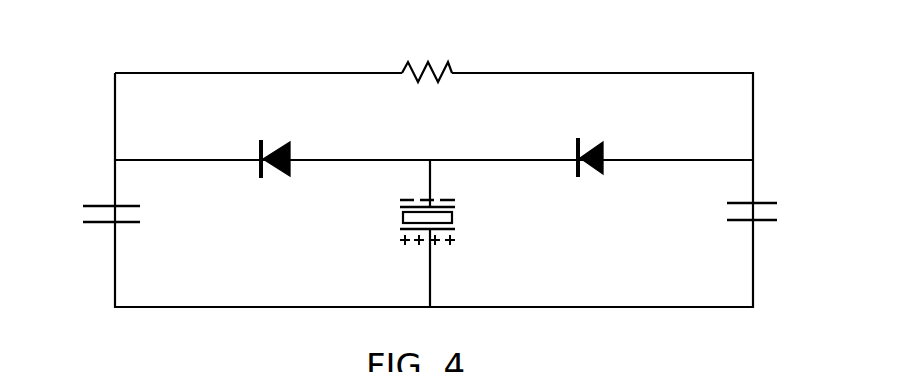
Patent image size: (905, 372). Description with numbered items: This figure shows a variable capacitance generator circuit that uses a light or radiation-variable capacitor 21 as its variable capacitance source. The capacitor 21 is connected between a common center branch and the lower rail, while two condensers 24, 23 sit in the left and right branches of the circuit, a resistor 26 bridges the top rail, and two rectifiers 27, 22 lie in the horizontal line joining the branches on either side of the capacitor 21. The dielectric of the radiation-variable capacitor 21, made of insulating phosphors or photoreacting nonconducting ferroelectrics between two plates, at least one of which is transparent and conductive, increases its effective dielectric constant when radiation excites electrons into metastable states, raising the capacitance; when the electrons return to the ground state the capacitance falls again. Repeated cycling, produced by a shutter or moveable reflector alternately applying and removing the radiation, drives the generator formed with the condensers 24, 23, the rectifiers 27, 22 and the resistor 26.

The radiation-variable capacitor 21 is at (462, 213).
The rectifier 22 is at (595, 140).
The condenser 23 is at (775, 210).
The condenser 24 is at (80, 205).
The resistor 26 is at (437, 62).
The rectifier 27 is at (287, 141).